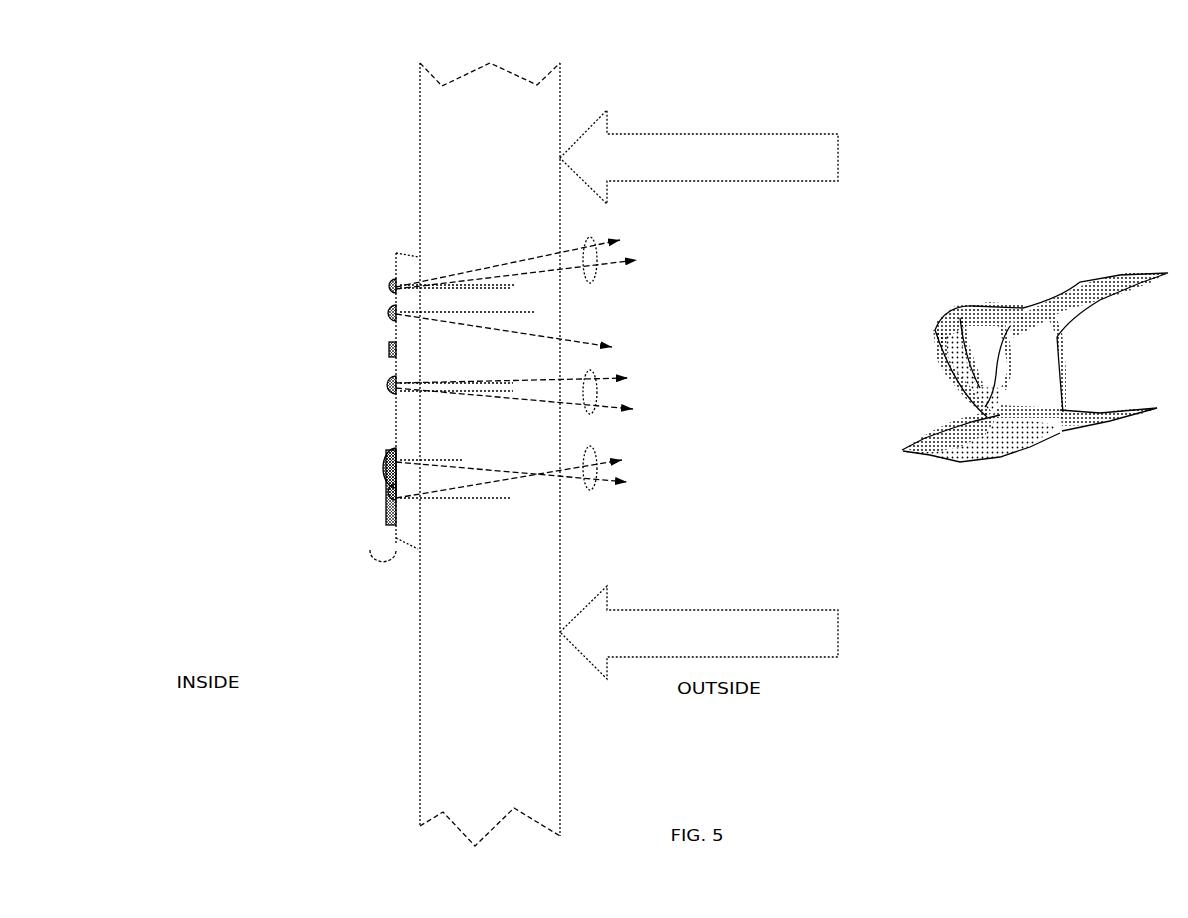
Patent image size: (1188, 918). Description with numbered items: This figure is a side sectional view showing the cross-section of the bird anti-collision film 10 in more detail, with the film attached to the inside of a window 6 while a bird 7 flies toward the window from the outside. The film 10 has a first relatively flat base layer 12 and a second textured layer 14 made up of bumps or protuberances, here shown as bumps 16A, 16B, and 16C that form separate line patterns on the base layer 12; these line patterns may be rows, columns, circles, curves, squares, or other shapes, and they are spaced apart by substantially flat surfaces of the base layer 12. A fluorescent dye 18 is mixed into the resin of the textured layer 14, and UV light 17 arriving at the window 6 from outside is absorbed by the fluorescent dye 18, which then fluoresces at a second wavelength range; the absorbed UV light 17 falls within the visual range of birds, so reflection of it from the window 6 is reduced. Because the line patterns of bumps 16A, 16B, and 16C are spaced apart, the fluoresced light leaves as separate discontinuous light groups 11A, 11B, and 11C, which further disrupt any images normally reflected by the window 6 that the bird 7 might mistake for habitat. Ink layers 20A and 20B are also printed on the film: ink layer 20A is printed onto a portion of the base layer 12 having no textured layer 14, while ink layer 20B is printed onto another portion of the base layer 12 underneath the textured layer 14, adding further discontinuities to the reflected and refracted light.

The window 6 is at (462, 80).
The bird 7 is at (1092, 272).
The bird anti-collision film 10 is at (388, 213).
The discontinuous light group 11A is at (592, 247).
The discontinuous light group 11B is at (592, 378).
The discontinuous light group 11C is at (592, 452).
The base layer 12 is at (396, 265).
The textured layer 14 is at (383, 569).
The bumps 16A is at (392, 285).
The bumps 16B is at (390, 385).
The bumps 16C is at (388, 470).
The UV light 17 is at (731, 134).
The fluorescent dye 18 is at (392, 290).
The ink layer 20A is at (388, 350).
The ink layer 20B is at (392, 533).